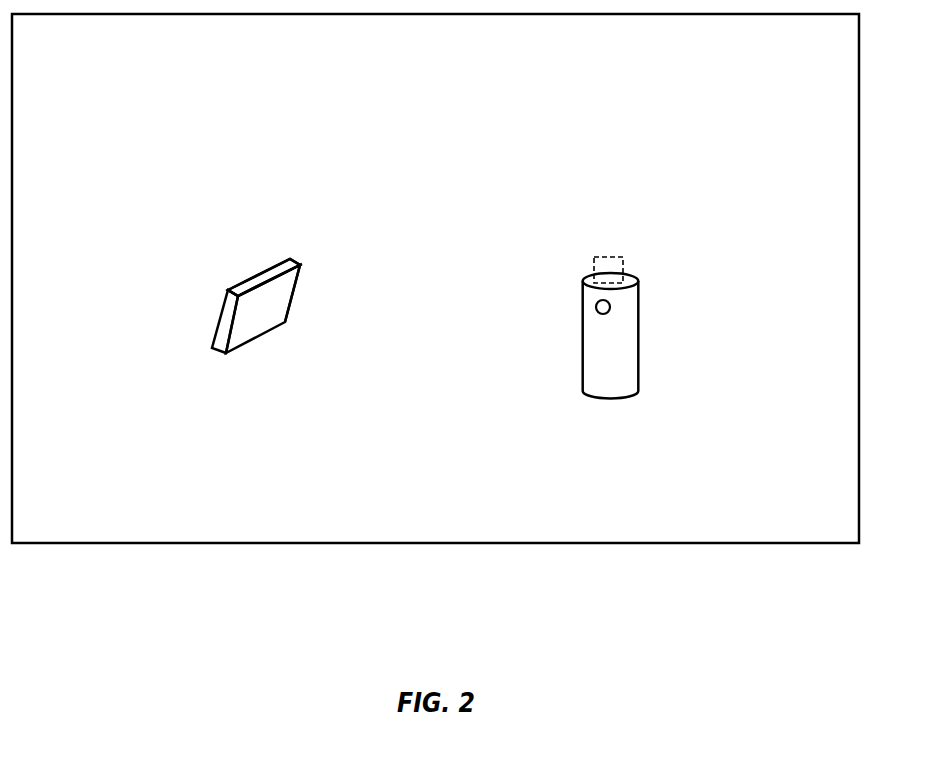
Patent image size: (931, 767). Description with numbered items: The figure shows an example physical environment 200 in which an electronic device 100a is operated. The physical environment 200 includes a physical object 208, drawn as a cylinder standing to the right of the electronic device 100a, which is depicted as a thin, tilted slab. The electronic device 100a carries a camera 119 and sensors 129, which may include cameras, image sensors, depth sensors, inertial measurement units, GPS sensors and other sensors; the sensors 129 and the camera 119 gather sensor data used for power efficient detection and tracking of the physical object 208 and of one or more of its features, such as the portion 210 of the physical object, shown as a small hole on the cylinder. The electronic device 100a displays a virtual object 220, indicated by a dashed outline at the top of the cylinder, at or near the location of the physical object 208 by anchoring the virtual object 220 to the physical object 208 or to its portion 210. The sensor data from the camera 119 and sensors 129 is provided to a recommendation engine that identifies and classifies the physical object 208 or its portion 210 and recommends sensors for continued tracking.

The physical environment 200 is at (605, 69).
The electronic device 100a is at (227, 313).
The camera 119 is at (273, 275).
The sensors 129 is at (243, 281).
The physical object 208 is at (630, 319).
The portion of the physical object 210 is at (597, 308).
The virtual object 220 is at (613, 255).